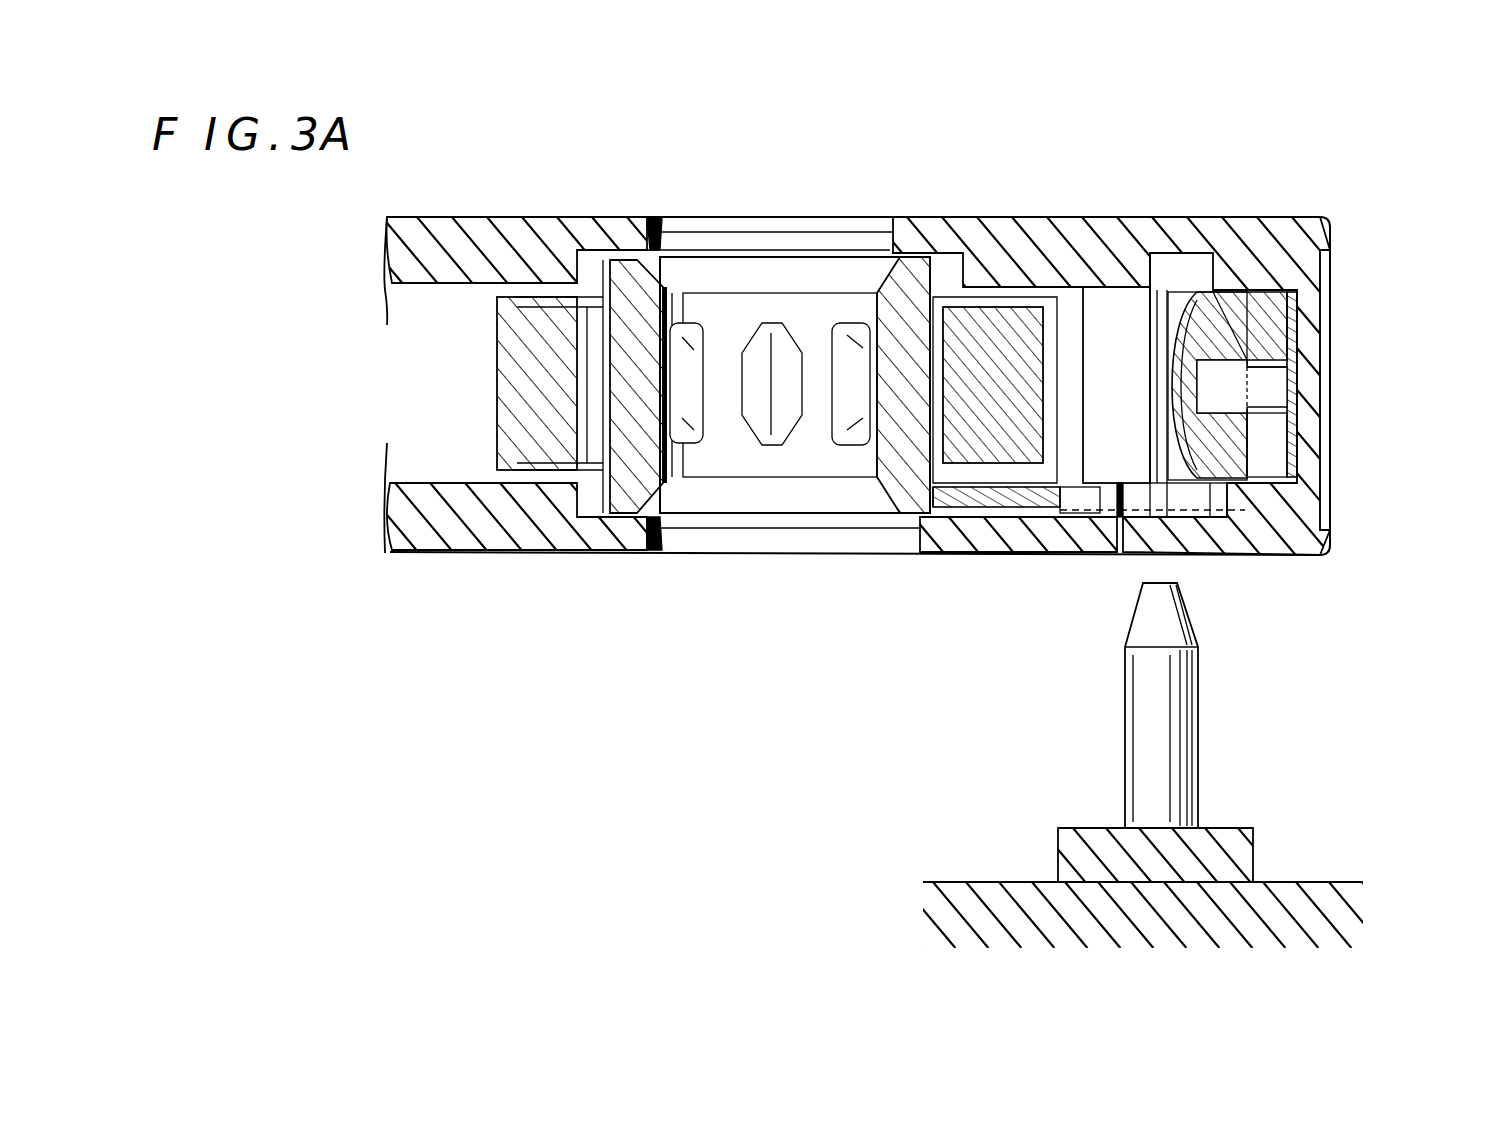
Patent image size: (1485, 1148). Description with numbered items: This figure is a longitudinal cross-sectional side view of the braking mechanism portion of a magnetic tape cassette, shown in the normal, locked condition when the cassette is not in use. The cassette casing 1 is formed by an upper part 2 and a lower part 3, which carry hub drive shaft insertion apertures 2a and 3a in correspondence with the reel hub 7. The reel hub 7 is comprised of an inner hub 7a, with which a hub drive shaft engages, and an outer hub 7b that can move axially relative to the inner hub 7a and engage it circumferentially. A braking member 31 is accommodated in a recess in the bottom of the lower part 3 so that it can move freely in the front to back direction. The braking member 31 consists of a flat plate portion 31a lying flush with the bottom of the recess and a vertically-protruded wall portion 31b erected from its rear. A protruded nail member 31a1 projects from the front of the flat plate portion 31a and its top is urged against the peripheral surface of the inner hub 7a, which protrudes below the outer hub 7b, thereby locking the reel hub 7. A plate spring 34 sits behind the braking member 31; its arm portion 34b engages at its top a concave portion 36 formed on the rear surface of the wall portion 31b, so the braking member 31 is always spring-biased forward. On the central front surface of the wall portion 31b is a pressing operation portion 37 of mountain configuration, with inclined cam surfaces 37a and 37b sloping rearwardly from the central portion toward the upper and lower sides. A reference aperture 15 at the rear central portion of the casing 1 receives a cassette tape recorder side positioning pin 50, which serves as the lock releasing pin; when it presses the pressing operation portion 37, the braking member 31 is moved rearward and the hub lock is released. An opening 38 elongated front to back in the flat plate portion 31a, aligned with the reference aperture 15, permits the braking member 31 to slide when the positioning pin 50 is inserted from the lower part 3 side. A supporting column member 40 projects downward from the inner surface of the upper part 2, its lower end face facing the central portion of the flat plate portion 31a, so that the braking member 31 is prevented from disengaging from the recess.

The cassette casing 1 is at (916, 216).
The upper part 2 is at (478, 216).
The hub drive shaft insertion aperture 2a is at (658, 222).
The lower part 3 is at (468, 553).
The hub drive shaft insertion aperture 3a is at (660, 551).
The reel hub 7 is at (768, 514).
The inner hub 7a is at (890, 490).
The outer hub 7b is at (540, 455).
The reference aperture 15 is at (1117, 286).
The braking member 31 is at (1250, 437).
The flat plate portion 31a is at (1002, 508).
The protruded nail member 31a1 is at (945, 510).
The vertically-protruded wall portion 31b is at (1213, 300).
The plate spring 34 is at (1290, 368).
The arm portion 34b is at (1270, 360).
The concave portion 36 is at (1268, 300).
The pressing operation portion 37 is at (1158, 378).
The inclined cam surface 37a is at (1188, 290).
The inclined cam surface 37b is at (1200, 436).
The opening 38 is at (1070, 500).
The supporting column member 40 is at (1093, 333).
The positioning pin 50 is at (1198, 716).